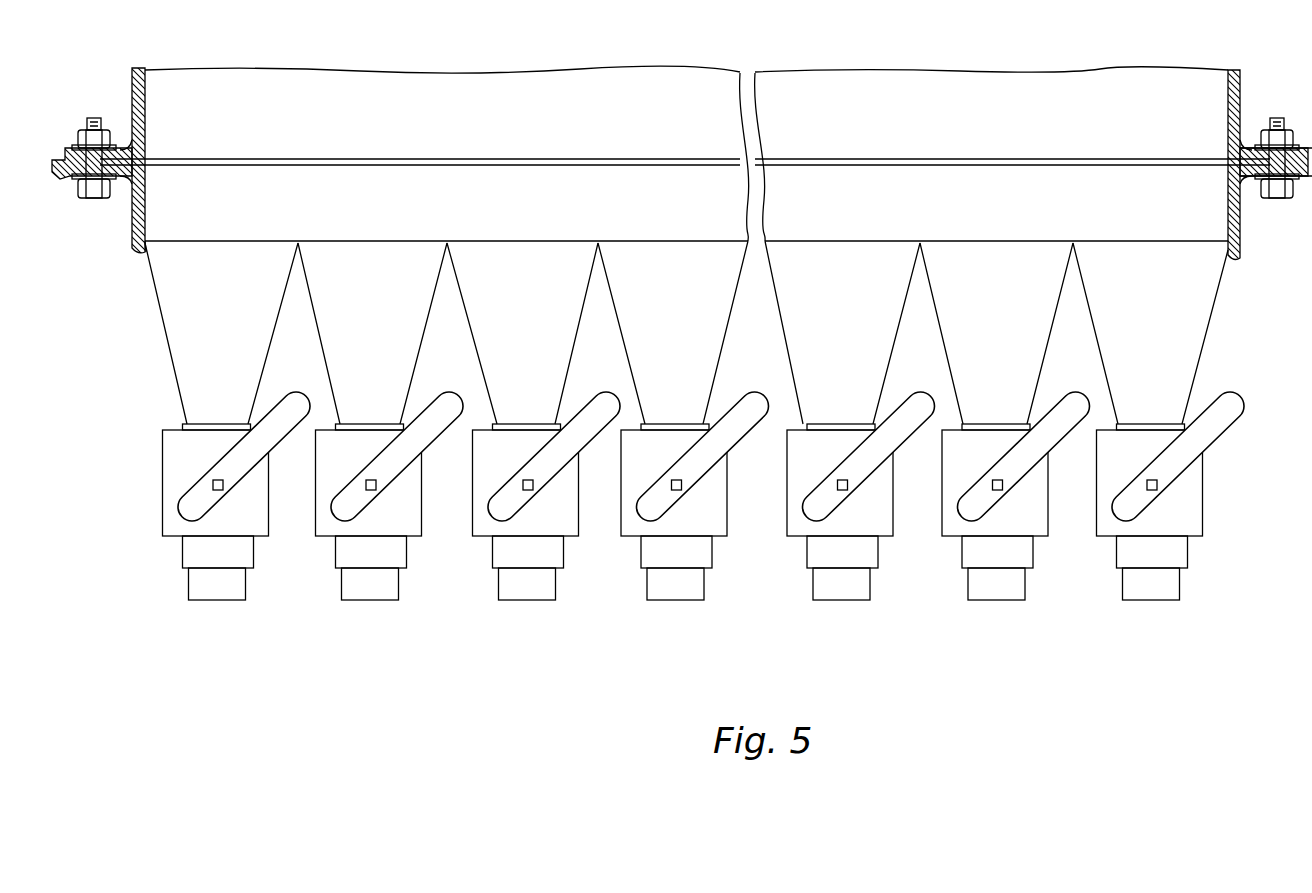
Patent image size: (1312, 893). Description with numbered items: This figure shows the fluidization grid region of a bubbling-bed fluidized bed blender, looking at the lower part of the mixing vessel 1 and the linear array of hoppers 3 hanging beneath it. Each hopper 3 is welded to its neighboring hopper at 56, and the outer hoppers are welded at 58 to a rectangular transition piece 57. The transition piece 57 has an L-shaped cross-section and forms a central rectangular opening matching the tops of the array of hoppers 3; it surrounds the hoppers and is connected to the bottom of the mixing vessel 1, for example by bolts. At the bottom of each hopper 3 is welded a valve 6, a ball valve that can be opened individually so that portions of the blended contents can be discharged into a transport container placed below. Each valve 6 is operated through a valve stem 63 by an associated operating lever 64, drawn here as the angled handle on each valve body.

The mixing vessel 1 is at (130, 106).
The hoppers 3 is at (143, 325).
The valves 6 is at (162, 467).
The weld between adjacent hoppers 56 is at (298, 243).
The transition piece 57 is at (132, 218).
The weld between hoppers and transition piece 58 is at (143, 256).
The valve stem 63 is at (212, 492).
The operating lever 64 is at (283, 443).